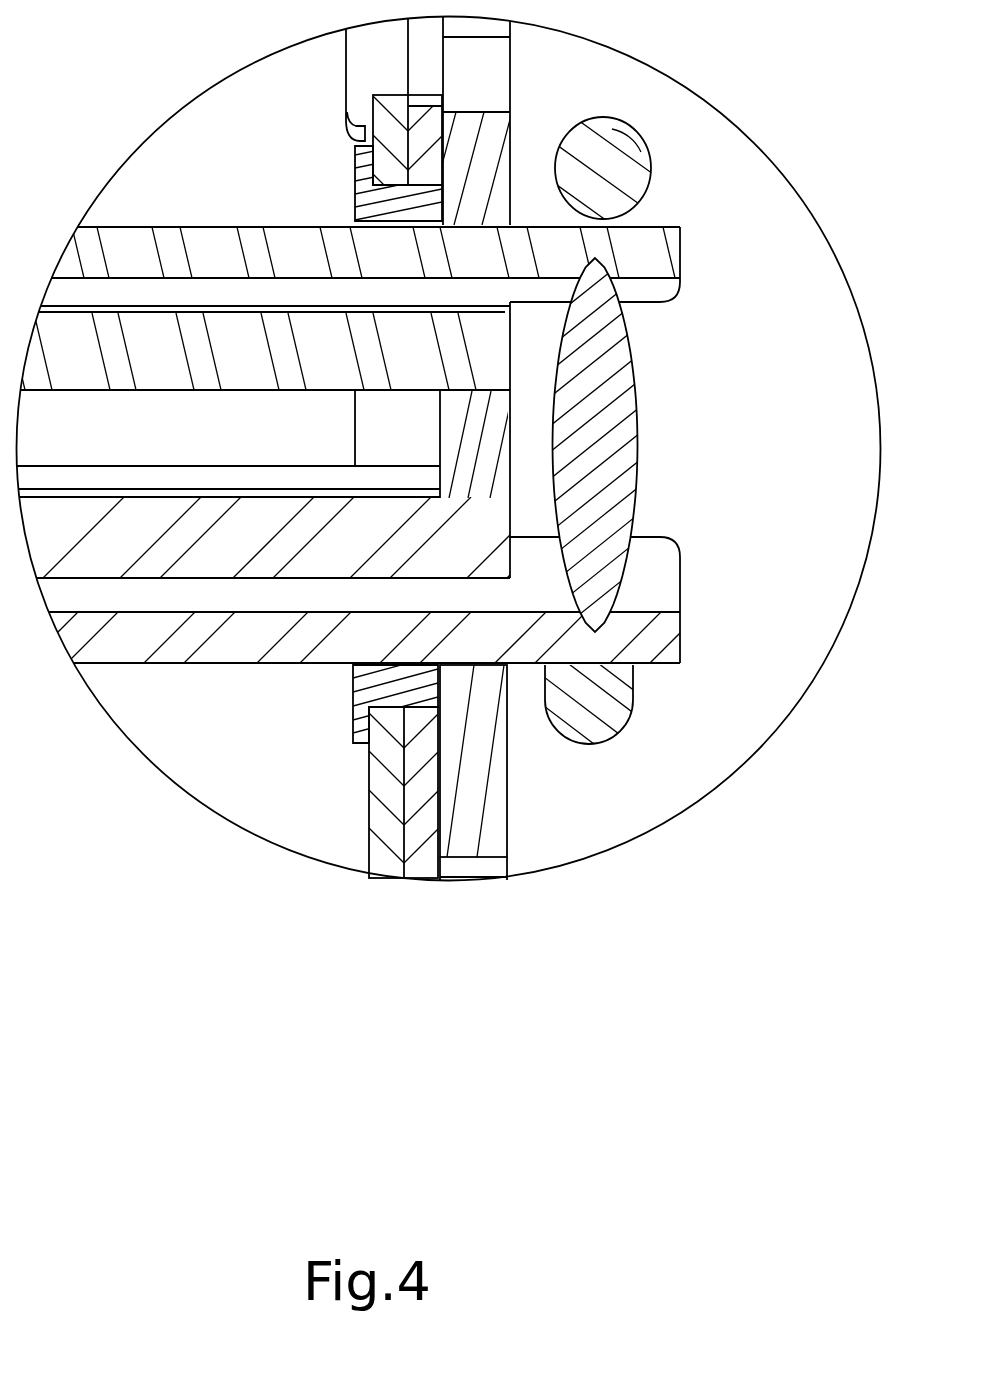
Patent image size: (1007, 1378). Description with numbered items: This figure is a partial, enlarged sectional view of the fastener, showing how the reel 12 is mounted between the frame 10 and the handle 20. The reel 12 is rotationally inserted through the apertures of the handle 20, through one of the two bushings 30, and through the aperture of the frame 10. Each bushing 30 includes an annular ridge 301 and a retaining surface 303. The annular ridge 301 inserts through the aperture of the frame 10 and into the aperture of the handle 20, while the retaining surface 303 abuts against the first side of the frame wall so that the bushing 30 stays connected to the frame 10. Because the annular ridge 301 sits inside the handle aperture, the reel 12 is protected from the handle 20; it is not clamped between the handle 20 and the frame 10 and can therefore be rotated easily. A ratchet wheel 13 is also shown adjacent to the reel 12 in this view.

The frame 10 is at (359, 859).
The reel 12 is at (140, 633).
The ratchet wheel 13 is at (485, 451).
The handle 20 is at (444, 870).
The bushing 30 is at (347, 842).
The annular ridge 301 is at (441, 695).
The retaining surface 303 is at (353, 728).